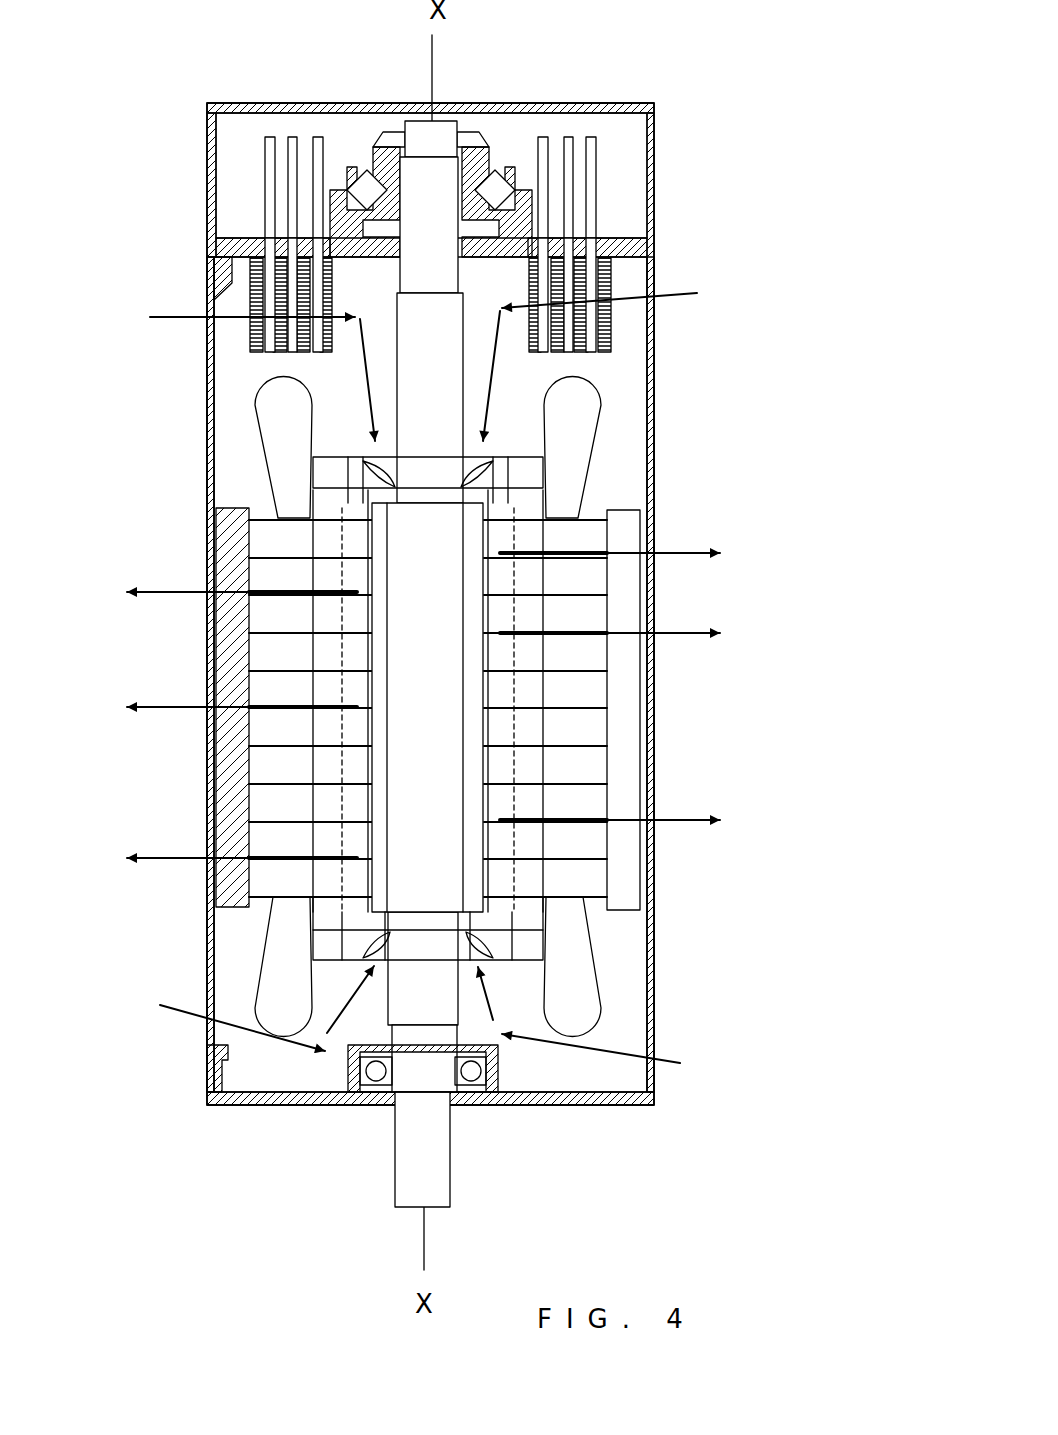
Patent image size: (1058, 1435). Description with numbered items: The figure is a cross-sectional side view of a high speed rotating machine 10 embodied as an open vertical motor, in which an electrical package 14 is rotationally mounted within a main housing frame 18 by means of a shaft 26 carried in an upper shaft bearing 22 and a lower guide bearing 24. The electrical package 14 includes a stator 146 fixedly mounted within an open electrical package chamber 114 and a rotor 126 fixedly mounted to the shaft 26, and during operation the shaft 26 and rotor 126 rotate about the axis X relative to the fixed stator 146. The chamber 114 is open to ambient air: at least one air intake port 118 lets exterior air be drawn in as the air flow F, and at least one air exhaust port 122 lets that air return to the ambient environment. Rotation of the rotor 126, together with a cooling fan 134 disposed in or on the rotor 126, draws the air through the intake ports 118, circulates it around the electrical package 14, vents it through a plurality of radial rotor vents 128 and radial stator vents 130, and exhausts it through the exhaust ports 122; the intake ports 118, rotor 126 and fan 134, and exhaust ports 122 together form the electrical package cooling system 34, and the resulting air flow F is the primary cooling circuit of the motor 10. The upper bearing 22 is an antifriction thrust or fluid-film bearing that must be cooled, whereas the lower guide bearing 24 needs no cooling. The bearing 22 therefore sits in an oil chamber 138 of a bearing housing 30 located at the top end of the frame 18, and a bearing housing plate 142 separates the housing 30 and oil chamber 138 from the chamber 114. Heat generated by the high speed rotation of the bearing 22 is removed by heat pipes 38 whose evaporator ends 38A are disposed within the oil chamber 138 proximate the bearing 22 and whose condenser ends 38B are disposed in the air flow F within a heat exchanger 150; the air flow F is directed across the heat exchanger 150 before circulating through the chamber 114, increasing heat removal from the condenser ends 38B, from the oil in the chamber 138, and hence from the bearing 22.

The high speed rotating machine 10 is at (745, 68).
The electrical package 14 is at (442, 672).
The main housing frame 18 is at (220, 487).
The upper shaft bearing 22 is at (495, 190).
The lower guide bearing 24 is at (480, 1107).
The shaft 26 is at (422, 175).
The bearing housing 30 is at (650, 180).
The electrical package cooling system 34 is at (732, 298).
The heat pipes 38 is at (322, 192).
The evaporator ends 38A is at (318, 137).
The condenser ends 38B is at (318, 352).
The open electrical package chamber 114 is at (235, 430).
The air intake port 118 is at (208, 340).
The air exhaust port 122 is at (232, 682).
The rotor 126 is at (520, 765).
The radial rotor vents 128 is at (347, 813).
The radial stator vents 130 is at (275, 767).
The cooling fan 134 is at (362, 935).
The oil chamber 138 is at (360, 125).
The bearing housing plate 142 is at (640, 252).
The stator 146 is at (583, 768).
The heat exchanger 150 is at (250, 290).